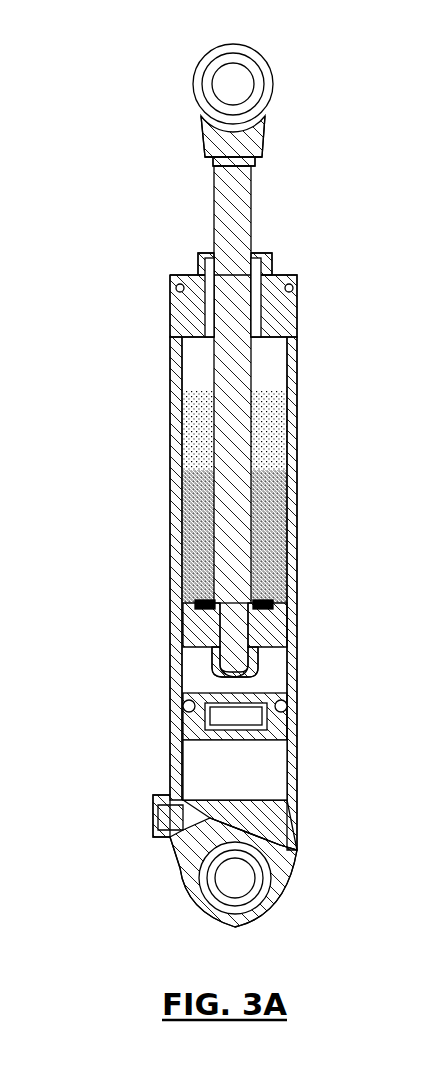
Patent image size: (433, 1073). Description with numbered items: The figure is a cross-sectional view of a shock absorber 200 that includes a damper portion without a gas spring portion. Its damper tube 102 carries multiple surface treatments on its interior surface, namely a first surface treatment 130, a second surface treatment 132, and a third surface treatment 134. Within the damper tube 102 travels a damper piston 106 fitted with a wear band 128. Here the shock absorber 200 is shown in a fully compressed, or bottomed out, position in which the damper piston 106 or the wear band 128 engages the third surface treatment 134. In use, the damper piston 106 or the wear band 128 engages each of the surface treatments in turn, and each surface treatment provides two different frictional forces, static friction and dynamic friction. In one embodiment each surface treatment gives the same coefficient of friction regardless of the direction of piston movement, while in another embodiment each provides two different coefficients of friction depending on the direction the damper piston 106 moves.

The shock absorber 200 is at (140, 73).
The damper tube 102 is at (178, 432).
The damper piston 106 is at (200, 625).
The wear band 128 is at (288, 622).
The first surface treatment 130 is at (272, 511).
The second surface treatment 132 is at (275, 455).
The third surface treatment 134 is at (273, 362).